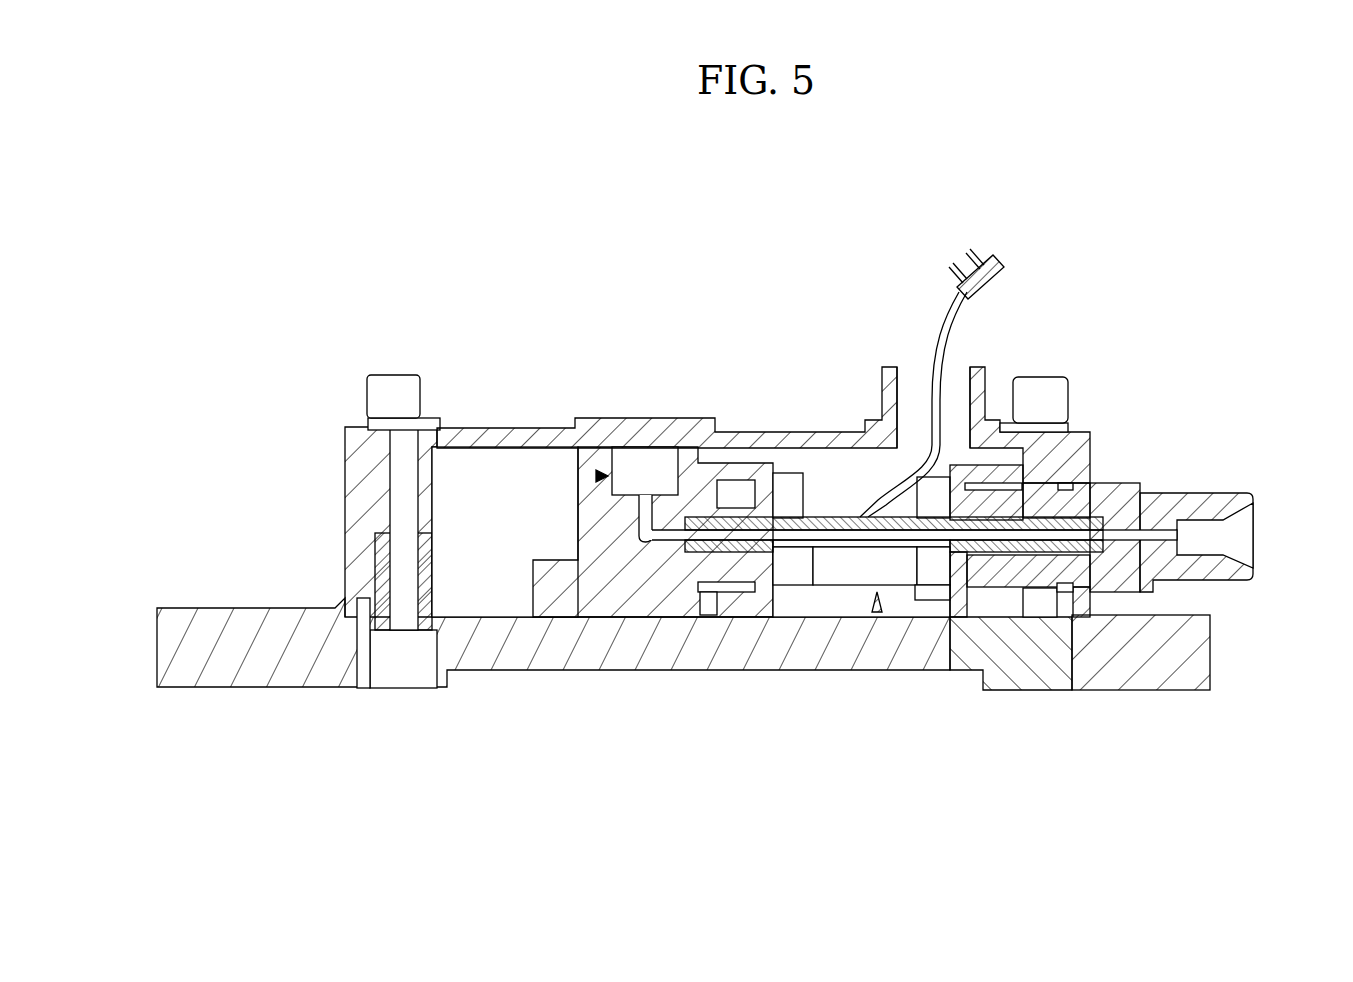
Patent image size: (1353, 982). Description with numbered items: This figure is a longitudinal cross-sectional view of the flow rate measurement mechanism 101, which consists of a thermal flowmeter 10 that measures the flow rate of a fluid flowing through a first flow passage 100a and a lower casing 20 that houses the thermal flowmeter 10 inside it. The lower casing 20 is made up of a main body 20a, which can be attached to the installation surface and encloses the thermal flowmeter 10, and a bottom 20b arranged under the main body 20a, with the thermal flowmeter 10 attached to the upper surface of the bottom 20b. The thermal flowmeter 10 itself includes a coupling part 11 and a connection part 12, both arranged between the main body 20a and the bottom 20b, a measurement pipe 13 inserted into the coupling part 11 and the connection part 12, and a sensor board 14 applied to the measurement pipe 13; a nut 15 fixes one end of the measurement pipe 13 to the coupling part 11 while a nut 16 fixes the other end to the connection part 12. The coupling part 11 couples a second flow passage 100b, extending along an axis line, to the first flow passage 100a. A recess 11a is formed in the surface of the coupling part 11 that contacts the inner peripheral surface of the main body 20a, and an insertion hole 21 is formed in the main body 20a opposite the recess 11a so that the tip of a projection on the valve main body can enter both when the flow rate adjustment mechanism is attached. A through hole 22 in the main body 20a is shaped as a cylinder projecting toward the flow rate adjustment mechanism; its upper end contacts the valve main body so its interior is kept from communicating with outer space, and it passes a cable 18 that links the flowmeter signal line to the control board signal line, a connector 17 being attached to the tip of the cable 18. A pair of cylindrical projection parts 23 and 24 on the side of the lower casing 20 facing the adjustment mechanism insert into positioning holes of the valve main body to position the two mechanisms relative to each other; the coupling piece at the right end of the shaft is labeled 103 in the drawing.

The flow rate measurement mechanism 101 is at (814, 248).
The thermal flowmeter 10 is at (877, 612).
The coupling part 11 is at (627, 600).
The recess 11a is at (596, 476).
The connection part 12 is at (1040, 607).
The measurement pipe 13 is at (837, 507).
The sensor board 14 is at (815, 592).
The nut 15 is at (745, 610).
The nut 16 is at (958, 608).
The connector 17 is at (990, 258).
The cable 18 is at (945, 342).
The lower casing 20 is at (512, 797).
The main body 20a is at (308, 686).
The bottom 20b is at (462, 686).
The insertion hole 21 is at (607, 418).
The through hole 22 is at (918, 392).
The projection part 23 is at (390, 375).
The projection part 24 is at (1036, 377).
The first flow passage 100a is at (1130, 525).
The second flow passage 100b is at (655, 495).
The coupling 103 is at (1245, 535).